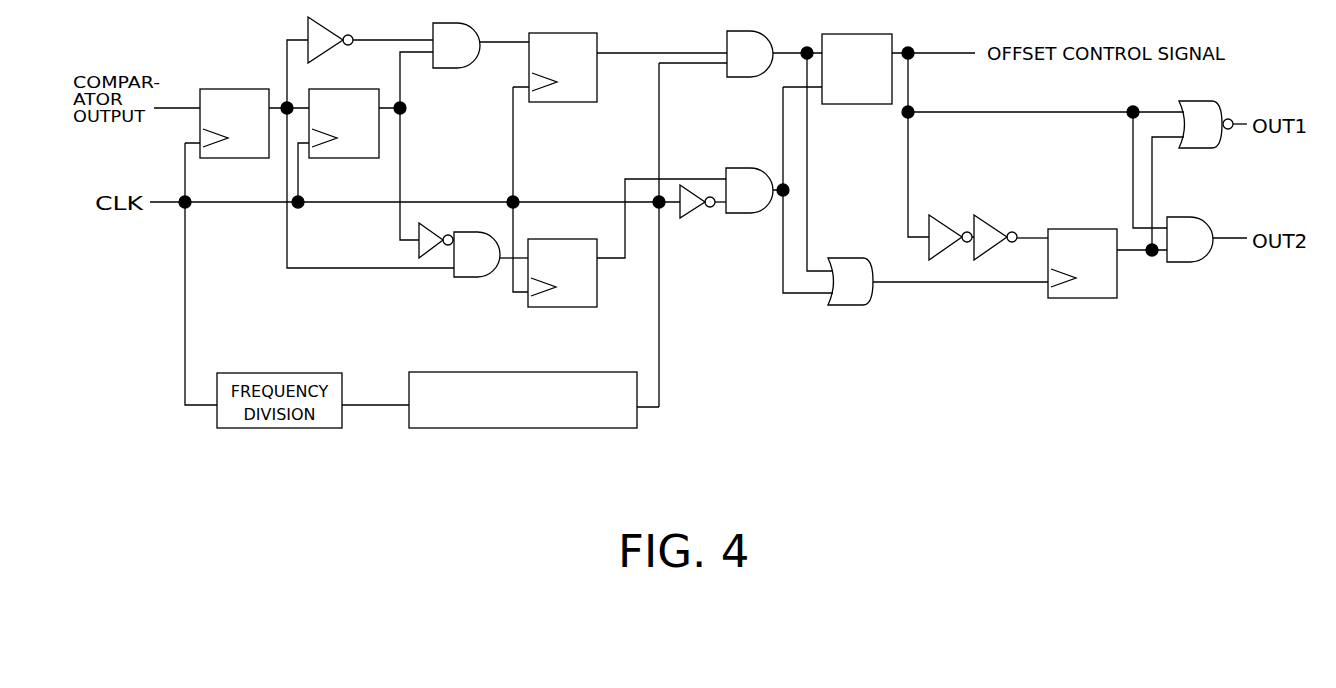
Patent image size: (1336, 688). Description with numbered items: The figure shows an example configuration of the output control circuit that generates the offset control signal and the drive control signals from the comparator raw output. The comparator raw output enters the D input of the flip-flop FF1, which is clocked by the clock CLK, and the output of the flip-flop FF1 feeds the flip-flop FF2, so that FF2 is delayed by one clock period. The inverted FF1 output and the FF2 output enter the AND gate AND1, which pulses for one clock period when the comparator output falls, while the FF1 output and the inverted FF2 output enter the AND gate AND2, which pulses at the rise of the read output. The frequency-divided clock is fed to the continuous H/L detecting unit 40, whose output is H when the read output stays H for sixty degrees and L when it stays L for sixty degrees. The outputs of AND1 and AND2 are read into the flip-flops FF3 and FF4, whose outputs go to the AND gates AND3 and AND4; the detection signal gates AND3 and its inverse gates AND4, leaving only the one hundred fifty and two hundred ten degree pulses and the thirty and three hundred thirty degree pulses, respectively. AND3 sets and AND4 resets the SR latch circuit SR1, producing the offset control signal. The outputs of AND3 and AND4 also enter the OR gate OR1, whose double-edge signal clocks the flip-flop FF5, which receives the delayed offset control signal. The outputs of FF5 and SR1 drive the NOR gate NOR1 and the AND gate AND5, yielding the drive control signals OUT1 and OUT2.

The continuous H/L detecting unit 40 is at (523, 383).
The flip-flop FF1 is at (234, 110).
The flip-flop FF2 is at (344, 110).
The flip-flop FF3 is at (563, 55).
The flip-flop FF4 is at (562, 259).
The flip-flop FF5 is at (1082, 250).
The AND gate AND1 is at (459, 34).
The AND gate AND2 is at (468, 240).
The AND gate AND3 is at (740, 42).
The AND gate AND4 is at (743, 178).
The AND gate AND5 is at (1193, 225).
The OR gate OR1 is at (853, 271).
The NOR gate NOR1 is at (1196, 109).
The SR latch circuit SR1 is at (857, 55).